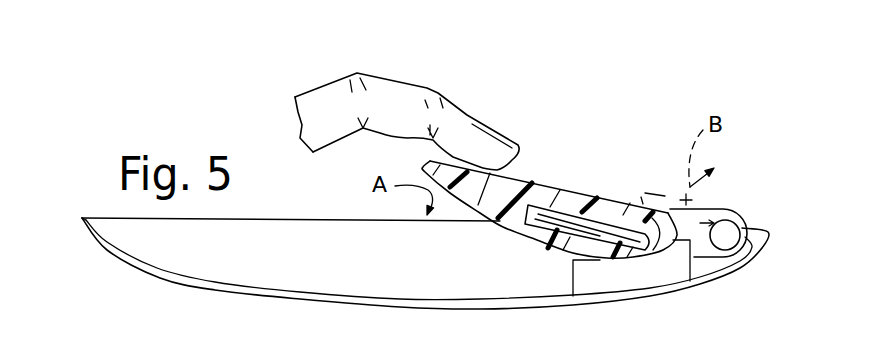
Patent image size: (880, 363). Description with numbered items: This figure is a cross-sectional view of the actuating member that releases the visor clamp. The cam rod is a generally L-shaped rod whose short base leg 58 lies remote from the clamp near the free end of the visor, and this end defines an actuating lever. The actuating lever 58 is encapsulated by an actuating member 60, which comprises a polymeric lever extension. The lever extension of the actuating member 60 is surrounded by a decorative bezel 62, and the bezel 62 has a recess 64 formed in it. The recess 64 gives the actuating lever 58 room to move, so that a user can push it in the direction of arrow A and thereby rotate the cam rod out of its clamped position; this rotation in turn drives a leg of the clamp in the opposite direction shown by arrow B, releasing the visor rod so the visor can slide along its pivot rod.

The base leg 58 is at (595, 215).
The actuating member 60 is at (548, 188).
The decorative bezel 62 is at (82, 218).
The recess 64 is at (308, 232).